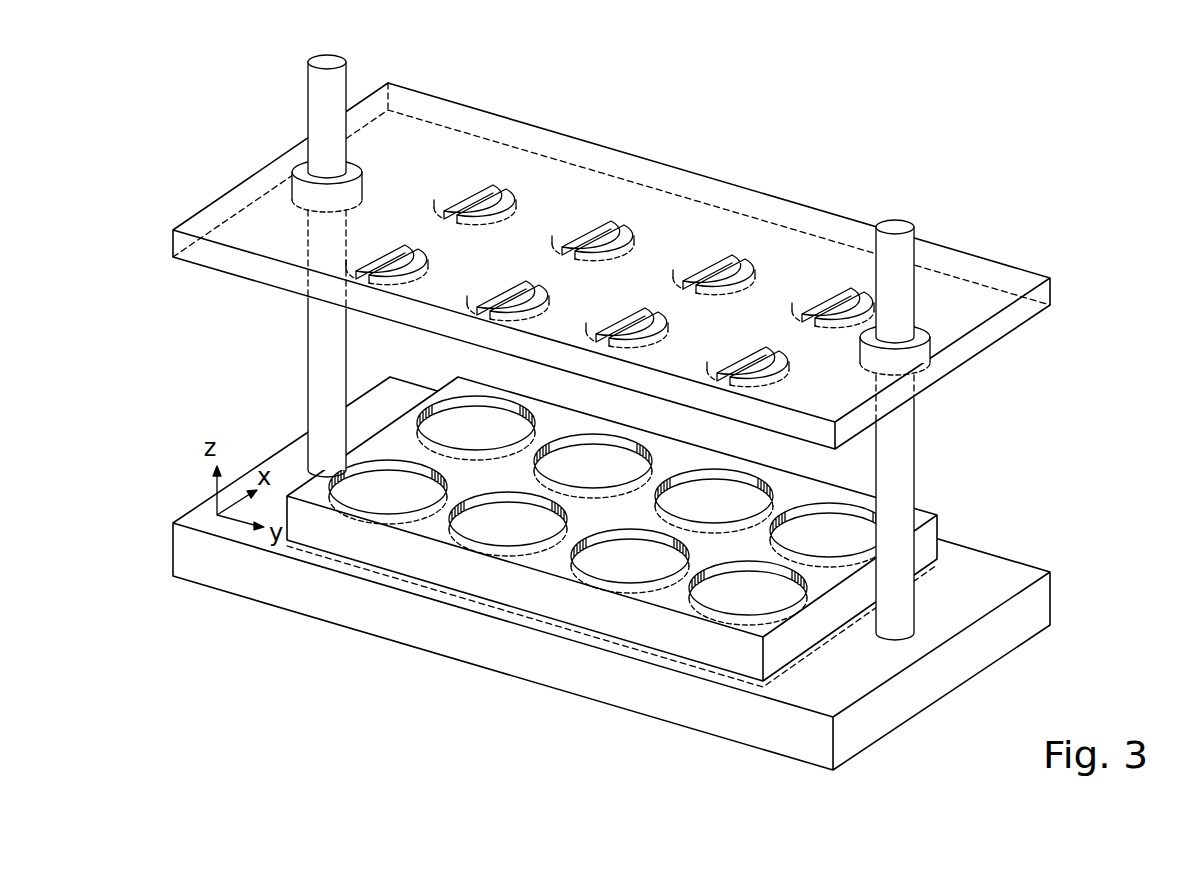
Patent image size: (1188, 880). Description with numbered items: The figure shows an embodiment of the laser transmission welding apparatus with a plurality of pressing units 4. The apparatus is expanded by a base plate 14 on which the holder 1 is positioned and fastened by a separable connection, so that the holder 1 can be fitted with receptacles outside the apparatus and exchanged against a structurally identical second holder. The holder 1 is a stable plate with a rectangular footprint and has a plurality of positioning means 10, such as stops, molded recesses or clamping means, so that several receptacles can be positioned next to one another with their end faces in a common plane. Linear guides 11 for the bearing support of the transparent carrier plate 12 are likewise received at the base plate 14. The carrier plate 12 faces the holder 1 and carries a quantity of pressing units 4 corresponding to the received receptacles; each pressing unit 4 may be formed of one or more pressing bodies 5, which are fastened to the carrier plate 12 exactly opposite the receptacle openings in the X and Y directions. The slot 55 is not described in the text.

The holder 1 is at (598, 571).
The pressing unit 4 is at (766, 170).
The pressing body 5 is at (687, 263).
The slot 55 is at (722, 259).
The positioning means 10 is at (697, 610).
The linear guide 11 is at (327, 343).
The carrier plate 12 is at (418, 138).
The base plate 14 is at (478, 637).